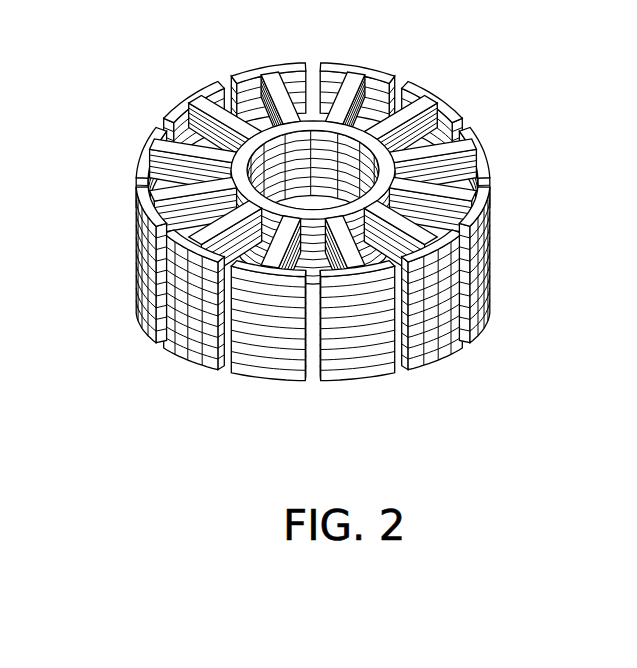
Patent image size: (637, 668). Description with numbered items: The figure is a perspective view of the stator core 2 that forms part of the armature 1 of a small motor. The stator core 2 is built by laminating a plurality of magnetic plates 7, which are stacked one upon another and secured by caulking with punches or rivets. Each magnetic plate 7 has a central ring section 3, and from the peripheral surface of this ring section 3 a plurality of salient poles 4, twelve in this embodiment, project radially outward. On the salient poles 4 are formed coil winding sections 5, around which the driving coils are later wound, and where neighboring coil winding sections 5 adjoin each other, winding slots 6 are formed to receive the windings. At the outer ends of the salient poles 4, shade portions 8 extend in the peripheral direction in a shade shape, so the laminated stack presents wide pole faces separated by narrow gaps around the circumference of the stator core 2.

The armature 1 is at (266, 335).
The stator core 2 is at (311, 238).
The ring section 3 is at (455, 121).
The salient pole 4 is at (311, 222).
The coil winding section 5 is at (358, 252).
The winding slot 6 is at (311, 222).
The magnetic plate 7 is at (352, 343).
The shade portion 8 is at (311, 225).